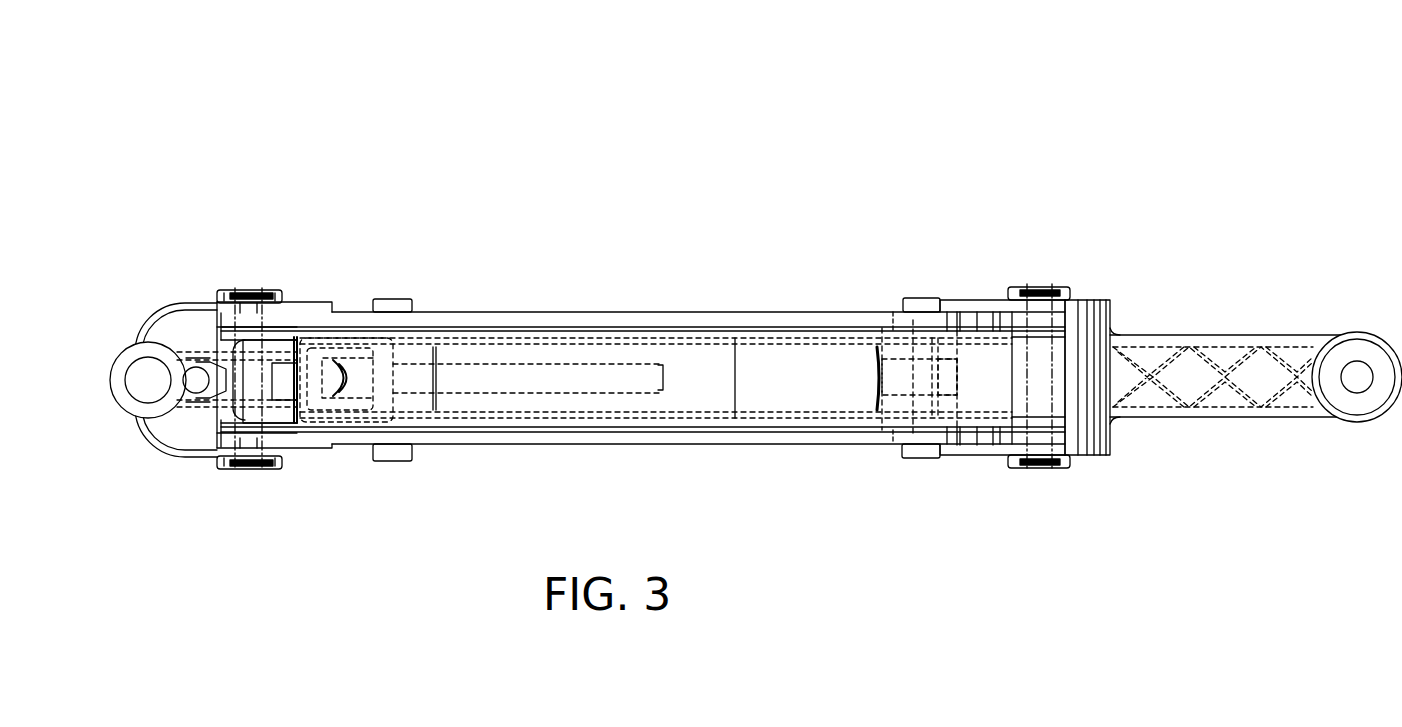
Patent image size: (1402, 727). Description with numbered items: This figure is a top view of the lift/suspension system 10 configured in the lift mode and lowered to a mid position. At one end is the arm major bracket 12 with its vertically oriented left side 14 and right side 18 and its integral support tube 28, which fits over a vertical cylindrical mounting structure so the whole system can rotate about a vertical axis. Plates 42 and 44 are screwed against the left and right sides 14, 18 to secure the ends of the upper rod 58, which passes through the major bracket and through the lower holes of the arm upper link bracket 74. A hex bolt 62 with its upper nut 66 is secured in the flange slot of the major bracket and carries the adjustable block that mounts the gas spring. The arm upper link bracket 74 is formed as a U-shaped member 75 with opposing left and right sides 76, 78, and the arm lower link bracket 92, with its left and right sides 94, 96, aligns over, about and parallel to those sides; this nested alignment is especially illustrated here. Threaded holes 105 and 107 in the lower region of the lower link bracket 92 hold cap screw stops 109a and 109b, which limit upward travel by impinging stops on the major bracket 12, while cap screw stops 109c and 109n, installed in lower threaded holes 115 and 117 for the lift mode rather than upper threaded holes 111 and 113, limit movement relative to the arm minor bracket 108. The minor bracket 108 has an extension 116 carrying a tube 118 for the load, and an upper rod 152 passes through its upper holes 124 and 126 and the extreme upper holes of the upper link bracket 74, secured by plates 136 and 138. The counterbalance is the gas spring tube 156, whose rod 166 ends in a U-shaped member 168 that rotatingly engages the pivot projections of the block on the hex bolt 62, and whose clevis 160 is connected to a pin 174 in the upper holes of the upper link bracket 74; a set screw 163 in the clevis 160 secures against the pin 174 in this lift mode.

The lift/suspension system 10 is at (603, 146).
The arm major bracket 12 is at (197, 290).
The left side 14 is at (297, 457).
The right side 18 is at (298, 322).
The support tube 28 is at (134, 406).
The plate 42 is at (223, 468).
The plate 44 is at (223, 303).
The upper rod 58 is at (253, 382).
The hex bolt 62 is at (273, 377).
The upper nut 66 is at (187, 360).
The arm upper link bracket 74 is at (749, 378).
The U-shaped member 75 is at (787, 367).
The left side 76 is at (882, 400).
The right side 78 is at (875, 330).
The arm lower link bracket 92 is at (642, 306).
The left side 94 is at (587, 446).
The right side 96 is at (557, 312).
The threaded hole 105 is at (405, 430).
The threaded hole 107 is at (405, 340).
The arm minor bracket 108 is at (963, 290).
The cap screw stop 109a is at (393, 461).
The cap screw stop 109b is at (393, 300).
The cap screw stop 109c is at (923, 458).
The cap screw stop 109n is at (915, 298).
The upper threaded hole 111 is at (1008, 430).
The upper threaded hole 113 is at (1005, 300).
The lower threaded hole 115 is at (950, 430).
The extension 116 is at (1237, 418).
The lower threaded hole 117 is at (893, 300).
The tube 118 is at (1348, 423).
The upper hole 124 is at (1078, 455).
The upper hole 126 is at (1088, 298).
The plate 136 is at (1067, 468).
The plate 138 is at (1060, 290).
The upper rod 152 is at (1052, 352).
The gas spring tube 156 is at (707, 385).
The clevis 160 is at (955, 382).
The set screw 163 is at (880, 384).
The rod 166 is at (412, 392).
The U-shaped member 168 is at (352, 338).
The pin 174 is at (910, 402).